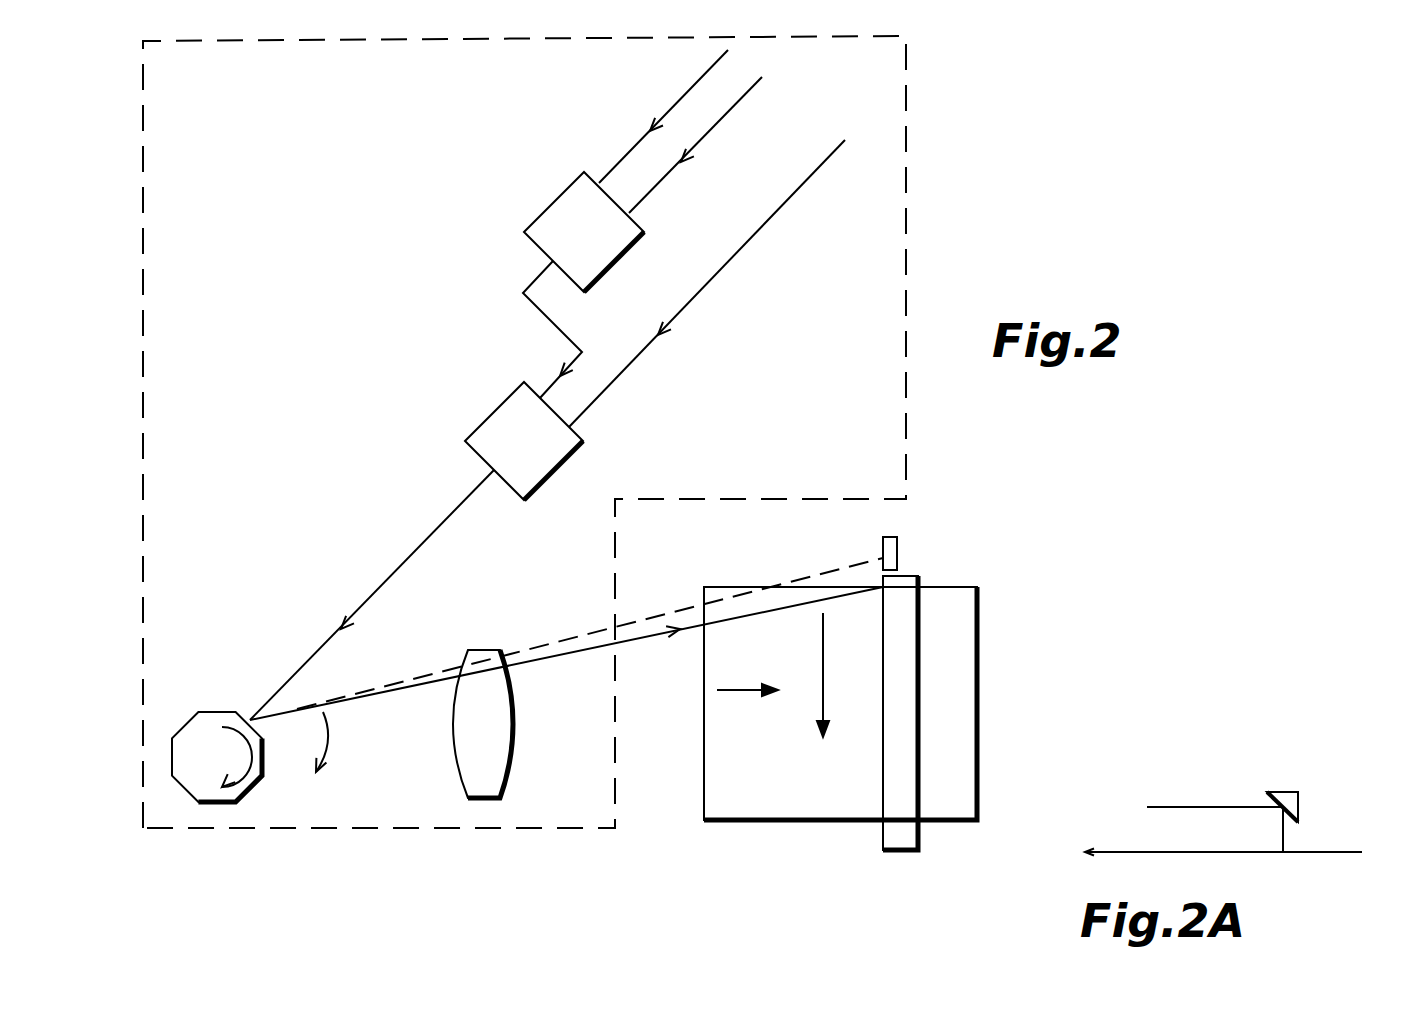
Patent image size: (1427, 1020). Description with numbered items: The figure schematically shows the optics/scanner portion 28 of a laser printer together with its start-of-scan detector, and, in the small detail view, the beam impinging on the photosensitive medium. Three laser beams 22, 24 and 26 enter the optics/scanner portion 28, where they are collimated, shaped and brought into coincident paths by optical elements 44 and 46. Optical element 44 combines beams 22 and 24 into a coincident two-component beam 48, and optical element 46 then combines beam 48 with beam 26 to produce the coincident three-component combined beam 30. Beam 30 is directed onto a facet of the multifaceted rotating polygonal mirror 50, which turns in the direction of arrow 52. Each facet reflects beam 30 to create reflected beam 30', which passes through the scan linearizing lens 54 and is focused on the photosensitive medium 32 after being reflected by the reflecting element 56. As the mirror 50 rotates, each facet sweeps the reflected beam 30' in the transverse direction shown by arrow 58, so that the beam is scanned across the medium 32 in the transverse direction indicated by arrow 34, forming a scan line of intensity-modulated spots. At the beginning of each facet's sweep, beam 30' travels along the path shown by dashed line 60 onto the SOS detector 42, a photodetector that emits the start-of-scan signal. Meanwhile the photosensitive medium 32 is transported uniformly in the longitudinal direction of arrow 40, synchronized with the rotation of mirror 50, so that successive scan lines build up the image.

In FIG. 2, the beam 22 is at (697, 86).
In FIG. 2, the beam 24 is at (728, 116).
In FIG. 2, the beam 26 is at (803, 186).
In FIG. 2, the optics/scanner portion 28 is at (907, 205).
In FIG. 2, the combined beam 30 is at (372, 595).
In FIG. 2, the reflected beam 30' is at (566, 658).
In FIG. 2A, the reflected beam 30' is at (1215, 789).
In FIG. 2, the photosensitive medium 32 is at (980, 672).
In FIG. 2A, the photosensitive medium 32 is at (1344, 852).
In FIG. 2, the arrow 34 is at (822, 665).
In FIG. 2, the arrow 40 is at (758, 694).
In FIG. 2, the SOS detector 42 is at (897, 548).
In FIG. 2, the optical element 44 is at (612, 264).
In FIG. 2, the optical element 46 is at (572, 462).
In FIG. 2, the two-component beam 48 is at (532, 306).
In FIG. 2, the rotating polygonal mirror 50 is at (216, 710).
In FIG. 2, the arrow 52 is at (244, 756).
In FIG. 2, the scan linearizing lens 54 is at (513, 750).
In FIG. 2, the reflecting element 56 is at (896, 674).
In FIG. 2A, the reflecting element 56 is at (1300, 802).
In FIG. 2, the arrow 58 is at (330, 745).
In FIG. 2, the dashed line 60 is at (590, 634).